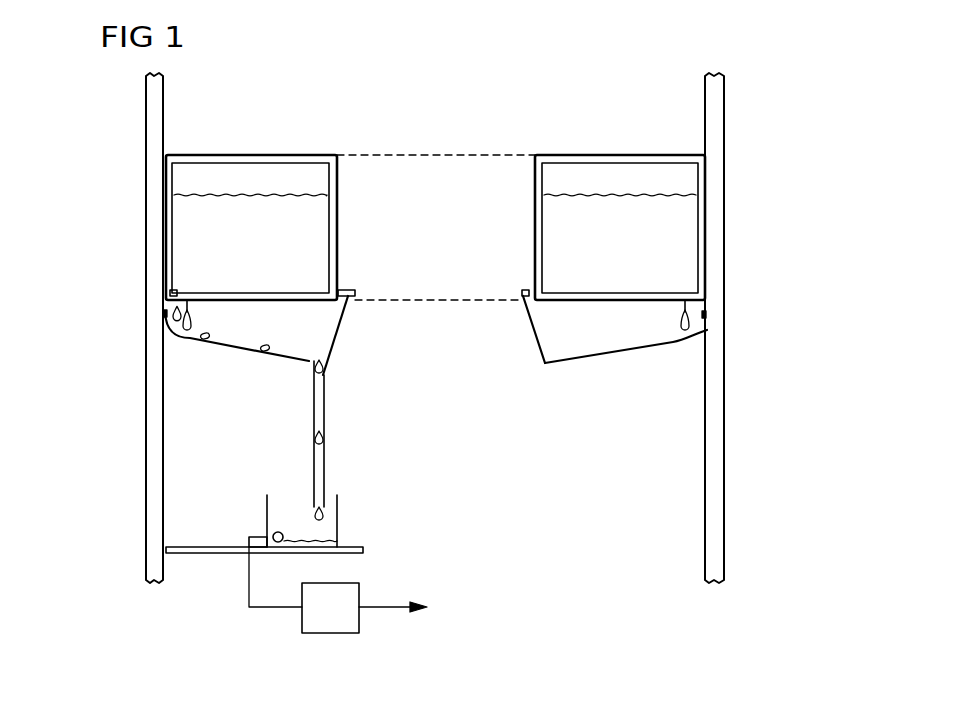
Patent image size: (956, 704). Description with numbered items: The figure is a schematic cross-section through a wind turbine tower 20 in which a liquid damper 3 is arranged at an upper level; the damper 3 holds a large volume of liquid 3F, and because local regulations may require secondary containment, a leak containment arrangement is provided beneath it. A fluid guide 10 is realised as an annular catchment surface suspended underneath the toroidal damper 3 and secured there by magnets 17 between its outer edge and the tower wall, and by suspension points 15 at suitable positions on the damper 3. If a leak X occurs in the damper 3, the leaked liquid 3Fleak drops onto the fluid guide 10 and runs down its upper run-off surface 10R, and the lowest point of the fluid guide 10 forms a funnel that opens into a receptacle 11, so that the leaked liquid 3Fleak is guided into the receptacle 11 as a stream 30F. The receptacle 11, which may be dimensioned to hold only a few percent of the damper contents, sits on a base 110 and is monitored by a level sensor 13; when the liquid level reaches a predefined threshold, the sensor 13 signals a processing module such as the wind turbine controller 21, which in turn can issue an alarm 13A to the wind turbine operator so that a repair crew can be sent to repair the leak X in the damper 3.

The wind turbine tower 20 is at (165, 90).
The fluid in tank 3F is at (249, 204).
The liquid damper 3 is at (637, 102).
The leak X is at (168, 300).
The suspension points 15 is at (349, 290).
The leaked liquid 3Fleak is at (261, 352).
The drained fluid stream 30F is at (310, 363).
The base plate 110 is at (175, 548).
The receptacle 11 is at (266, 500).
The level sensor 13 is at (273, 534).
The alarm 13A is at (380, 607).
The wind turbine controller 21 is at (330, 634).
The run-off surface 10R is at (580, 357).
The fluid guide 10 is at (614, 361).
The magnets 17 is at (707, 316).